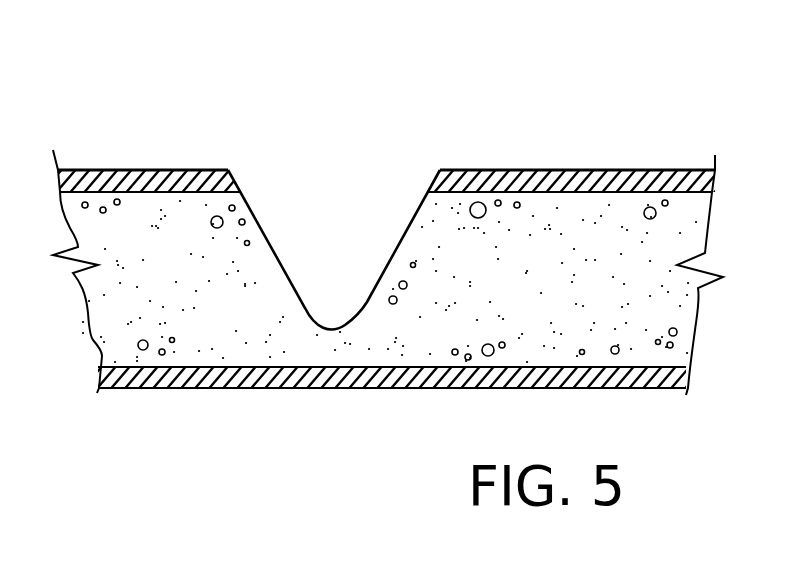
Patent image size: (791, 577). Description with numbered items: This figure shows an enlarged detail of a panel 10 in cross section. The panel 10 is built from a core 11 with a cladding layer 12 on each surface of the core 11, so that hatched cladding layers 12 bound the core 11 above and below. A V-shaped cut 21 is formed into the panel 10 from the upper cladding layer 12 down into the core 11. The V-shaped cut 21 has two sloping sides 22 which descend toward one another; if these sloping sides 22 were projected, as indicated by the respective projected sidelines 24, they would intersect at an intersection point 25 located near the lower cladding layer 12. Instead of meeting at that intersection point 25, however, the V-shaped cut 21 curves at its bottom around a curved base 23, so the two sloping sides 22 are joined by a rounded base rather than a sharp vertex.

The panel 10 is at (578, 86).
The core 11 is at (518, 237).
The cladding layer 12 is at (643, 187).
The V-shaped cut 21 is at (352, 151).
The sloping sides 22 is at (400, 247).
The curved base 23 is at (330, 316).
The projected sidelines 24 is at (407, 386).
The intersection point 25 is at (315, 330).